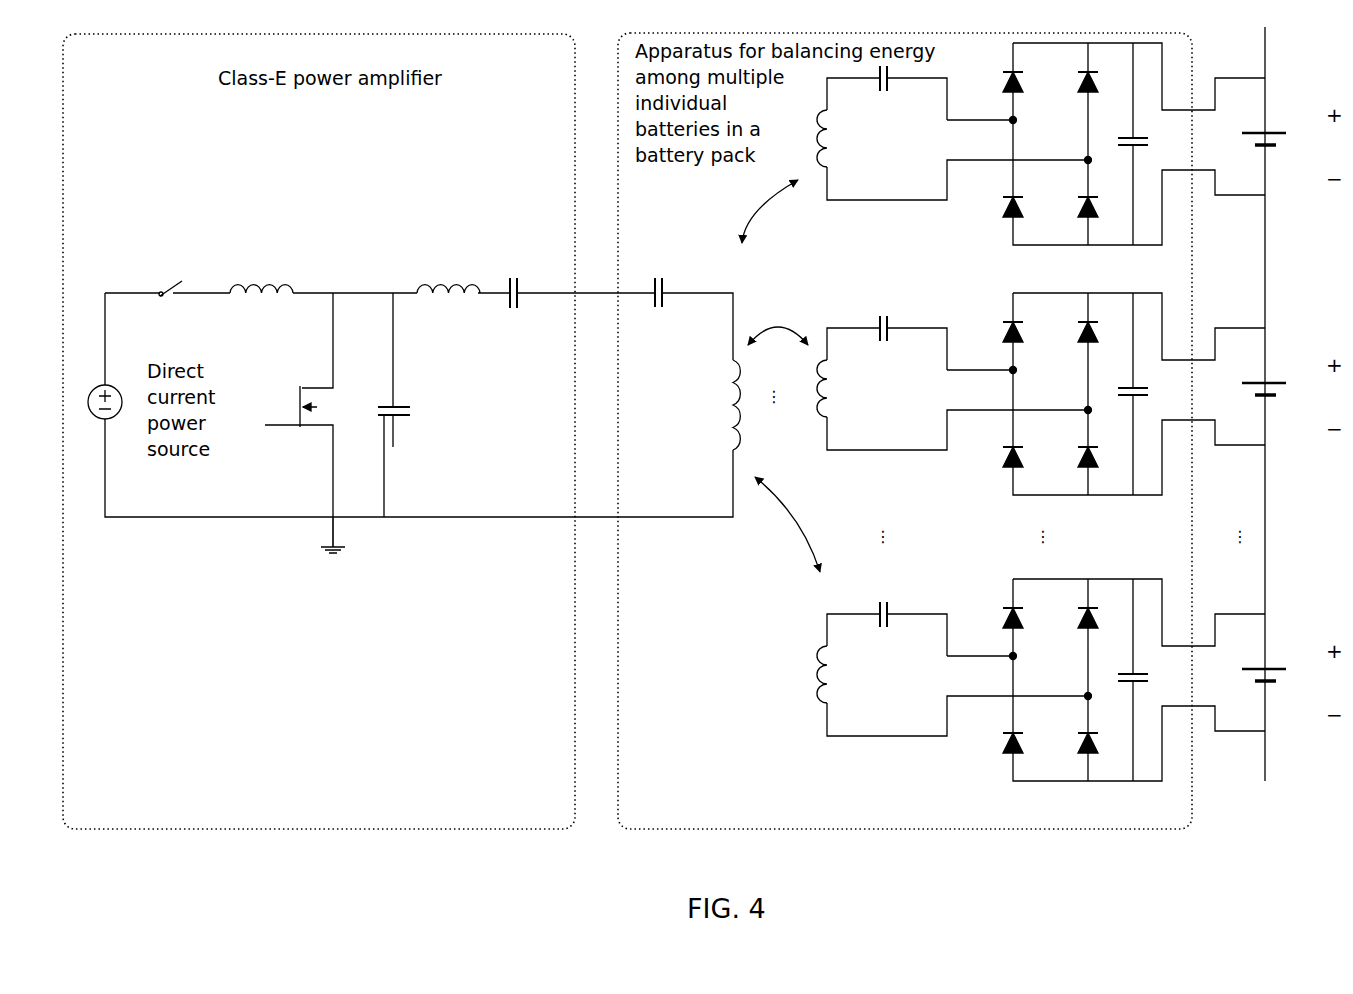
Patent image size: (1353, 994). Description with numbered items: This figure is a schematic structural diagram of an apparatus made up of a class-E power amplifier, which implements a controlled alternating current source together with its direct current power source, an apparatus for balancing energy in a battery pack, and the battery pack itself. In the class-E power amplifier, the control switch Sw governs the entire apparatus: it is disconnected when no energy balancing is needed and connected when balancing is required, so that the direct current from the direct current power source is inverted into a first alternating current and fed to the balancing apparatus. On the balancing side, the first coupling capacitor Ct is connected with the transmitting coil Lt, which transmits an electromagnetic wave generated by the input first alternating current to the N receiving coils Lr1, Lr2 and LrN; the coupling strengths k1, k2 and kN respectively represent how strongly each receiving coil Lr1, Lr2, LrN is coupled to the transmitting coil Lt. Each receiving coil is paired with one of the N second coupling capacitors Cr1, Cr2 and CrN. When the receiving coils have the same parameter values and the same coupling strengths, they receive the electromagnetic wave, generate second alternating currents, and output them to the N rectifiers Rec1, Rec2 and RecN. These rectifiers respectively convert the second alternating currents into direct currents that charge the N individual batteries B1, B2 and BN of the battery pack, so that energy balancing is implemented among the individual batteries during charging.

The control switch Sw is at (166, 271).
The first coupling capacitor Ct is at (660, 314).
The transmitting coil Lt is at (720, 405).
The coupling strength k1 is at (765, 211).
The coupling strength k2 is at (778, 322).
The coupling strength kN is at (787, 512).
The second coupling capacitor Cr1 is at (903, 93).
The receiving coil Lr1 is at (844, 138).
The rectifier Rec1 is at (1134, 162).
The individual battery B1 is at (1292, 147).
The second coupling capacitor Cr2 is at (903, 341).
The receiving coil Lr2 is at (839, 388).
The rectifier Rec2 is at (1134, 415).
The individual battery B2 is at (1292, 397).
The second coupling capacitor CrN is at (902, 628).
The receiving coil LrN is at (843, 674).
The rectifier RecN is at (1134, 699).
The individual battery BN is at (1292, 683).